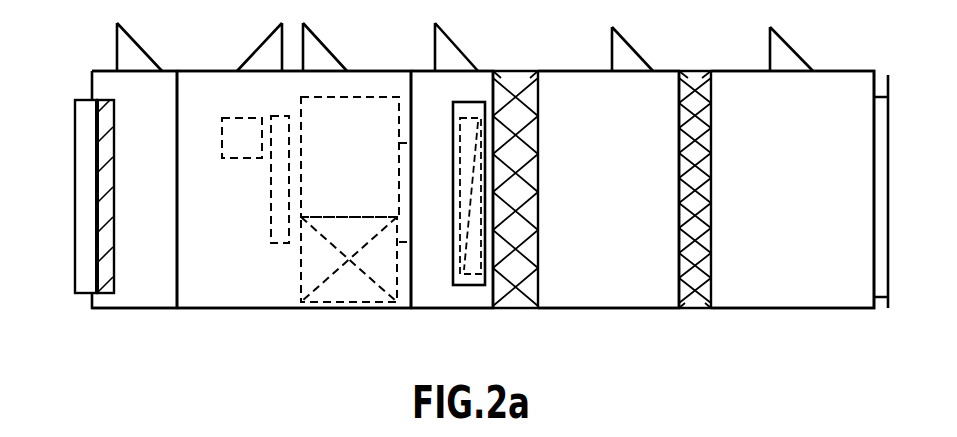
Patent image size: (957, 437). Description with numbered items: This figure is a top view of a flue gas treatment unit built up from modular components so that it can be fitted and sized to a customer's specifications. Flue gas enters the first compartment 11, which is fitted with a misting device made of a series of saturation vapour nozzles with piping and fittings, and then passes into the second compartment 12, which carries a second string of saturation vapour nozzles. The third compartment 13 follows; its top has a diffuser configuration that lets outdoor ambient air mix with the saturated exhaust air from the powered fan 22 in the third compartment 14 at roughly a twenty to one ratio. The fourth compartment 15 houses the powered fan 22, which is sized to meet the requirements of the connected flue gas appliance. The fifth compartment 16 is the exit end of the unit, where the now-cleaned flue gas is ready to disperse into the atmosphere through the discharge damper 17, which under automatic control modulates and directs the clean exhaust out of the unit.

The first compartment 11 is at (804, 206).
The second compartment 12 is at (627, 203).
The third compartment 13 is at (471, 285).
The third compartment 14 is at (433, 117).
The fourth compartment 15 is at (366, 173).
The fifth compartment 16 is at (131, 198).
The discharge damper 17 is at (98, 137).
The powered fan 22 is at (312, 263).